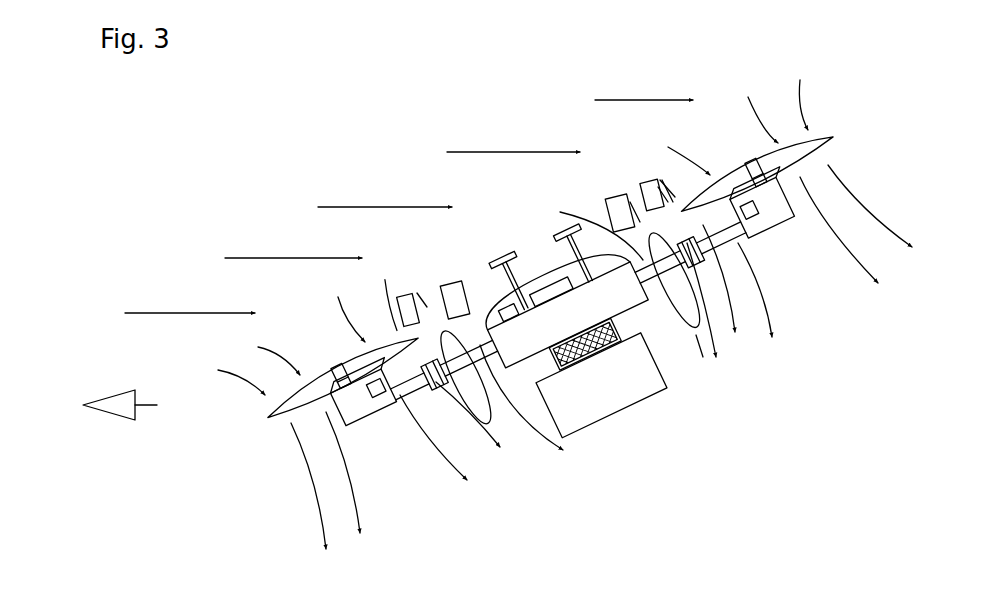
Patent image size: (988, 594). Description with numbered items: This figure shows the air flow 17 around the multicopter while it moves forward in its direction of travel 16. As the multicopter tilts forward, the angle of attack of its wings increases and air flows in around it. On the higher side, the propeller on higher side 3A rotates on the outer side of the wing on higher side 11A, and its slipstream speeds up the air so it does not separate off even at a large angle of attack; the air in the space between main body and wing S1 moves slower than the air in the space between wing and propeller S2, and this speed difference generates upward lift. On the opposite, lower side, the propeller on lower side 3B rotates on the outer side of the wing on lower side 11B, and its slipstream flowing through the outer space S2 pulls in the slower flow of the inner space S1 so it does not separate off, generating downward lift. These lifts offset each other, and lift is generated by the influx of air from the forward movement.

The propeller on higher side 3A is at (833, 137).
The propeller on lower side 3B is at (268, 418).
The wing on higher side 11A is at (698, 321).
The wing on lower side 11B is at (489, 428).
The multicopter's direction of travel 16 is at (120, 392).
The air flow around multicopter 17 is at (400, 282).
The space between main body and wing S1 is at (530, 249).
The space between wing and propeller S2 is at (531, 245).